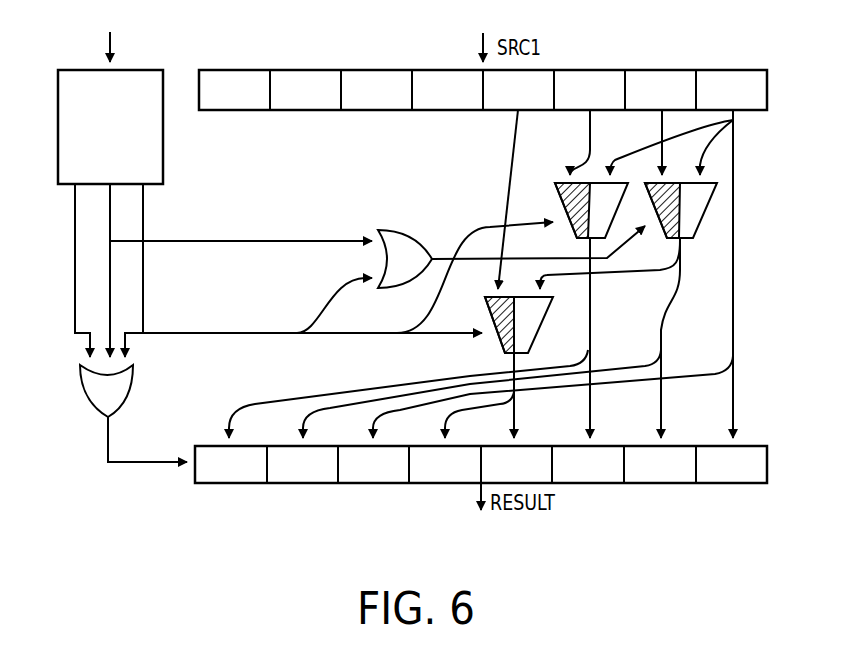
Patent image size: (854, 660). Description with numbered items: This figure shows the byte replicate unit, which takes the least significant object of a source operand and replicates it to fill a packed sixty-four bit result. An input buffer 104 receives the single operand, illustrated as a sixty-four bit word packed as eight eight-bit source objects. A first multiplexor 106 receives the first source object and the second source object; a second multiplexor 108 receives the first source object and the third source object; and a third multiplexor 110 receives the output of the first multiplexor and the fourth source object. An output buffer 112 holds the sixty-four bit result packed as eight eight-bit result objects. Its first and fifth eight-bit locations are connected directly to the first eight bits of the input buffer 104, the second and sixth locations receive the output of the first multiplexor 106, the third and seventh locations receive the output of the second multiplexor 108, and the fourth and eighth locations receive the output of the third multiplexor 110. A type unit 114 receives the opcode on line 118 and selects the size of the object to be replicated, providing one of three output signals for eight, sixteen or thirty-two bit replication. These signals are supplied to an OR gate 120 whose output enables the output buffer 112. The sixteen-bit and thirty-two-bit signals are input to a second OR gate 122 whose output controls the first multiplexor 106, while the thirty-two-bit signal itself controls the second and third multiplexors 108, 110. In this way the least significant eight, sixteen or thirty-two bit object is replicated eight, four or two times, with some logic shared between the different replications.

The input buffer 104 is at (748, 70).
The first multiplexor 106 is at (693, 238).
The second multiplexor 108 is at (562, 192).
The third multiplexor 110 is at (499, 341).
The output buffer 112 is at (220, 483).
The type unit 114 is at (165, 159).
The line 118 is at (108, 40).
The OR gate 120 is at (132, 399).
The second OR gate 122 is at (418, 233).